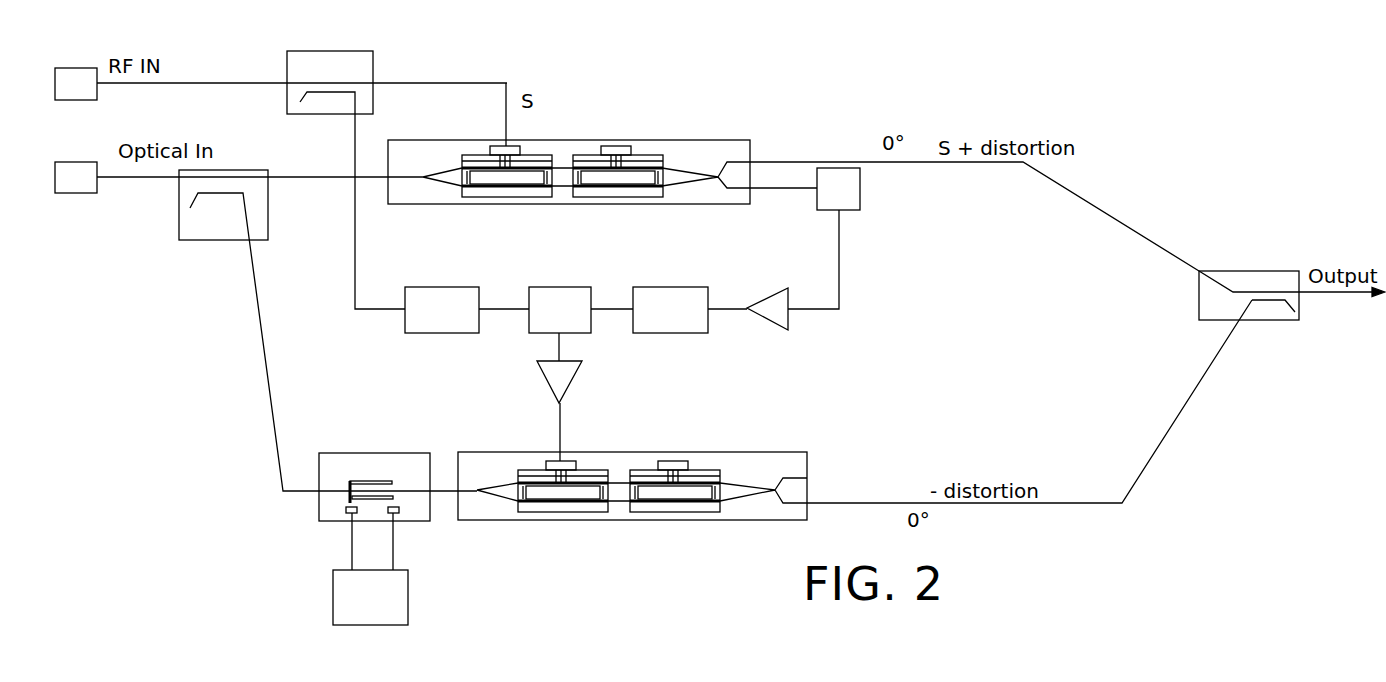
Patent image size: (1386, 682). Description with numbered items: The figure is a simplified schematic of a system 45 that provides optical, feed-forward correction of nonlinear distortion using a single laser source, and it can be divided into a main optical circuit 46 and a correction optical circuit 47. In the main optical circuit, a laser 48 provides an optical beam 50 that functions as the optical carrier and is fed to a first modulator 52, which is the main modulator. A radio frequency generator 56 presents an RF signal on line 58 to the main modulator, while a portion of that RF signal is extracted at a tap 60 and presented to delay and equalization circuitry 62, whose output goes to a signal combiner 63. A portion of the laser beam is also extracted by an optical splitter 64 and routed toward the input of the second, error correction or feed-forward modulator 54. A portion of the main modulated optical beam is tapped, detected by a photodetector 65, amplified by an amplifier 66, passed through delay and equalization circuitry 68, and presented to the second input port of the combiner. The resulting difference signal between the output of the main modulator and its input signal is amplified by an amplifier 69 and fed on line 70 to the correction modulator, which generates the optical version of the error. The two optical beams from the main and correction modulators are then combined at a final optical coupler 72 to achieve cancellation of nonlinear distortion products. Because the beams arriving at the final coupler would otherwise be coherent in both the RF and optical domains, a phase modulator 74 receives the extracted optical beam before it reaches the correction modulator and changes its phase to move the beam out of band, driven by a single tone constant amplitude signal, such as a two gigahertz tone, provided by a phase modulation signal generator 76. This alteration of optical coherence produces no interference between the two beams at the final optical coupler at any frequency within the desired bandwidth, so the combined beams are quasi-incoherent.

The system 45 is at (1058, 528).
The main optical circuit 46 is at (678, 108).
The correction optical circuit 47 is at (660, 536).
The laser 48 is at (85, 162).
The optical beam 50 is at (162, 180).
The first modulator 52 is at (443, 205).
The second modulator 54 is at (632, 503).
The radio frequency generator 56 is at (57, 68).
The line 58 is at (200, 83).
The tap 60 is at (330, 51).
The delay and equalization circuitry 62 is at (442, 287).
The signal combiner 63 is at (548, 287).
The optical splitter 64 is at (269, 222).
The photodetector 65 is at (862, 188).
The amplifier 66 is at (760, 298).
The delay and equalization circuitry 68 is at (662, 286).
The amplifier 69 is at (573, 383).
The line 70 is at (561, 433).
The final optical coupler 72 is at (1277, 313).
The phase modulator 74 is at (318, 510).
The phase modulation signal generator 76 is at (408, 593).